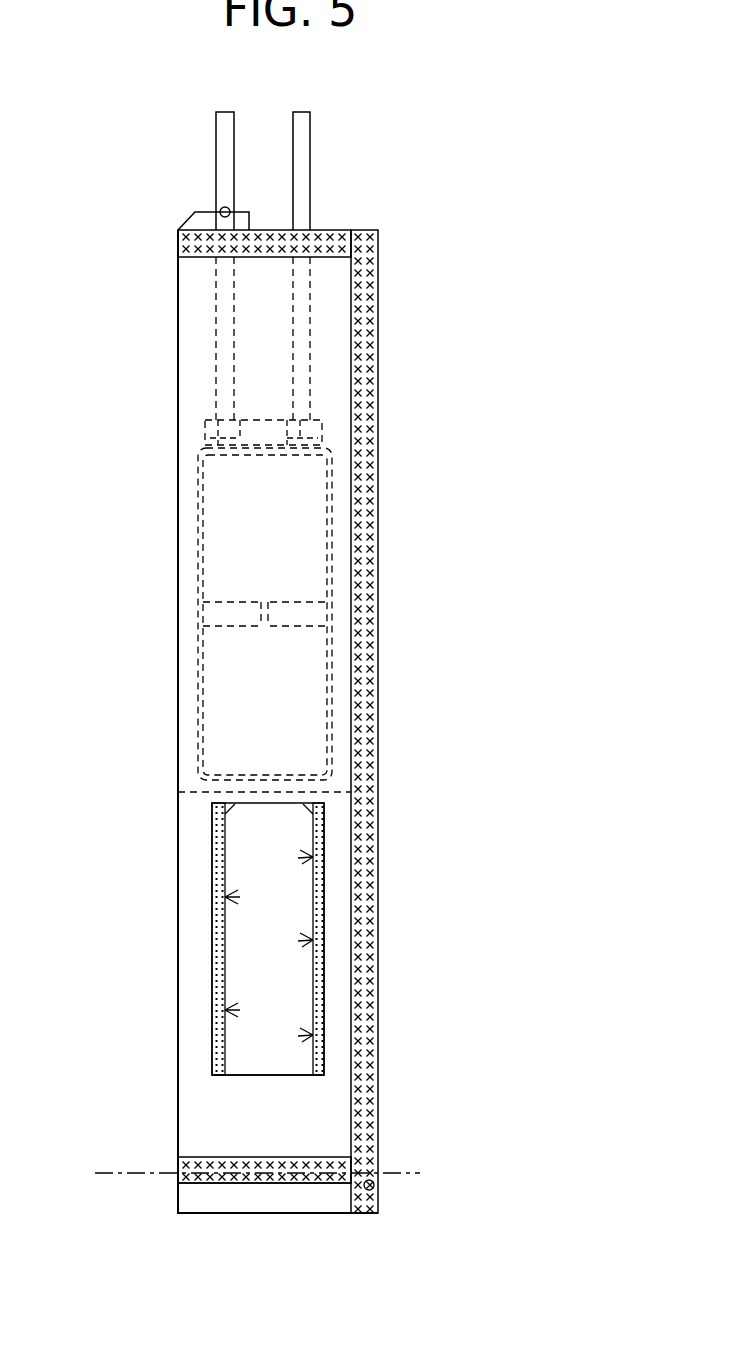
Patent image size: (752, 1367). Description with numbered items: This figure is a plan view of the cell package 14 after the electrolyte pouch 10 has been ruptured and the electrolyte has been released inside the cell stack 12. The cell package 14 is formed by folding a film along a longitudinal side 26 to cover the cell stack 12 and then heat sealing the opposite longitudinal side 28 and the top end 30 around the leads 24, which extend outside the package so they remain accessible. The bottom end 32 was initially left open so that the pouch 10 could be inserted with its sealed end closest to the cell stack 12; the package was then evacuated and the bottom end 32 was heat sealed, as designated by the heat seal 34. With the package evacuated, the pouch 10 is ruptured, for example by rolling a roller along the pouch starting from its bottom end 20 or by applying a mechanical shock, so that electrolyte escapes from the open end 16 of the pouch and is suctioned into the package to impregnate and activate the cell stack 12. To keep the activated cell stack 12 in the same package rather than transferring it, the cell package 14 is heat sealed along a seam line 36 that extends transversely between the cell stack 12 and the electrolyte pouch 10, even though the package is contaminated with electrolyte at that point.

The pouch 10 is at (328, 938).
The cell stack 12 is at (293, 545).
The cell package 14 is at (423, 357).
The open end 16 is at (272, 804).
The bottom end 20 is at (277, 1075).
The leads 24 is at (302, 144).
The longitudinal side 26 is at (178, 925).
The opposite longitudinal side 28 is at (378, 597).
The top end 30 is at (332, 228).
The bottom end 32 is at (232, 1213).
The heat seal 34 is at (313, 1185).
The seam line 36 is at (334, 792).